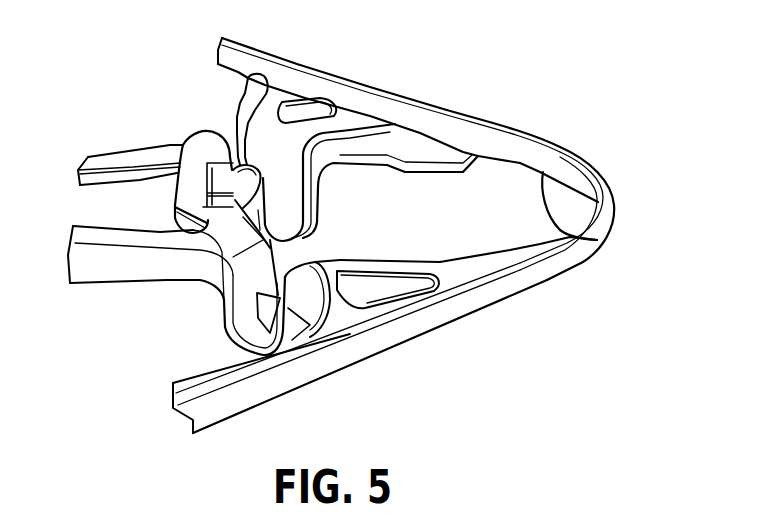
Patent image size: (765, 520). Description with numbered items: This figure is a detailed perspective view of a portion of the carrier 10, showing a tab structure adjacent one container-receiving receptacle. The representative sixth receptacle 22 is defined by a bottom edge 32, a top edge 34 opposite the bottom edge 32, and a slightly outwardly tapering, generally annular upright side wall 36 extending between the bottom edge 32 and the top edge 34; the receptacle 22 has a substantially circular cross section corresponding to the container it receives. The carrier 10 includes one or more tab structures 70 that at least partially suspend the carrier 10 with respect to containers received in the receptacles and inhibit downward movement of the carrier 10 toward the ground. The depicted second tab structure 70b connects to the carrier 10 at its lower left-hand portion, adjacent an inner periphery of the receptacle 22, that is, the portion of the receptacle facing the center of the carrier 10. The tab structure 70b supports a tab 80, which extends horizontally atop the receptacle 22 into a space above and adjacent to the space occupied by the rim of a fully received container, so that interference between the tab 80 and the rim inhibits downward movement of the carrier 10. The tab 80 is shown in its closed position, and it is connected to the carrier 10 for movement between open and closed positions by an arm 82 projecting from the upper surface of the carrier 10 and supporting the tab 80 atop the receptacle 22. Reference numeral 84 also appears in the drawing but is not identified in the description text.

The carrier 10 is at (117, 152).
The sixth receptacle 22 is at (457, 225).
The bottom edge 32 is at (603, 231).
The top edge 34 is at (552, 147).
The upright side wall 36 is at (570, 171).
The tab structure 70 is at (175, 135).
The second tab structure 70b is at (202, 135).
The tab 80 is at (238, 163).
The arm 82 is at (195, 191).
The tongue 84 is at (245, 163).